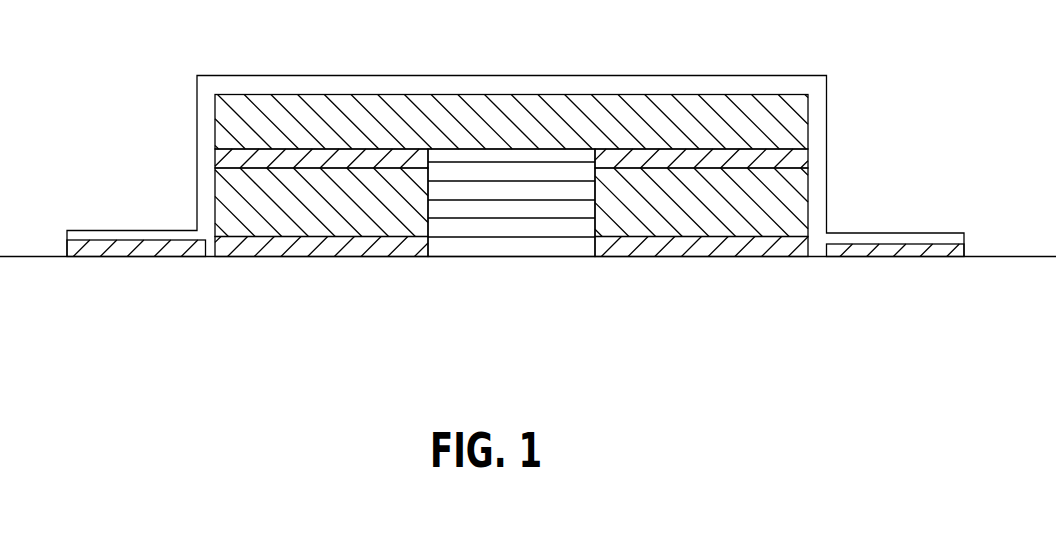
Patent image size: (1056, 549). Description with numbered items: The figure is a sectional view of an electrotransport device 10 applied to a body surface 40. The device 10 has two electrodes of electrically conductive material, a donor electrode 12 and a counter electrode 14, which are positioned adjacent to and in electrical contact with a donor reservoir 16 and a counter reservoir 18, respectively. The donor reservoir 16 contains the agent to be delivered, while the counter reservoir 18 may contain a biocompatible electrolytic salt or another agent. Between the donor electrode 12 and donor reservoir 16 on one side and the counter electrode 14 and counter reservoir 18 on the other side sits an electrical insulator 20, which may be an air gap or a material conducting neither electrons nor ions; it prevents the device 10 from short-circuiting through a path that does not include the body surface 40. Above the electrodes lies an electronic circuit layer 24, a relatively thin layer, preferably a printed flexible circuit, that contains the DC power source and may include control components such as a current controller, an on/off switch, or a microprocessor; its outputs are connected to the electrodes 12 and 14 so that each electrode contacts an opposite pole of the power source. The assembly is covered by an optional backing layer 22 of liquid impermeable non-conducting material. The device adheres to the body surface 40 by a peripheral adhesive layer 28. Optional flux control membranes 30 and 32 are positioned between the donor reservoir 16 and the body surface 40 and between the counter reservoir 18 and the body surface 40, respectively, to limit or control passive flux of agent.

The electrotransport device 10 is at (146, 153).
The donor electrode 12 is at (290, 142).
The counter electrode 14 is at (688, 160).
The donor reservoir 16 is at (402, 228).
The counter reservoir 18 is at (708, 225).
The electrical insulator 20 is at (485, 189).
The backing layer 22 is at (766, 86).
The electronic circuit layer 24 is at (403, 118).
The peripheral adhesive layer 28 is at (168, 257).
The flux control membrane 30 is at (323, 250).
The flux control membrane 32 is at (625, 250).
The body surface 40 is at (1012, 257).